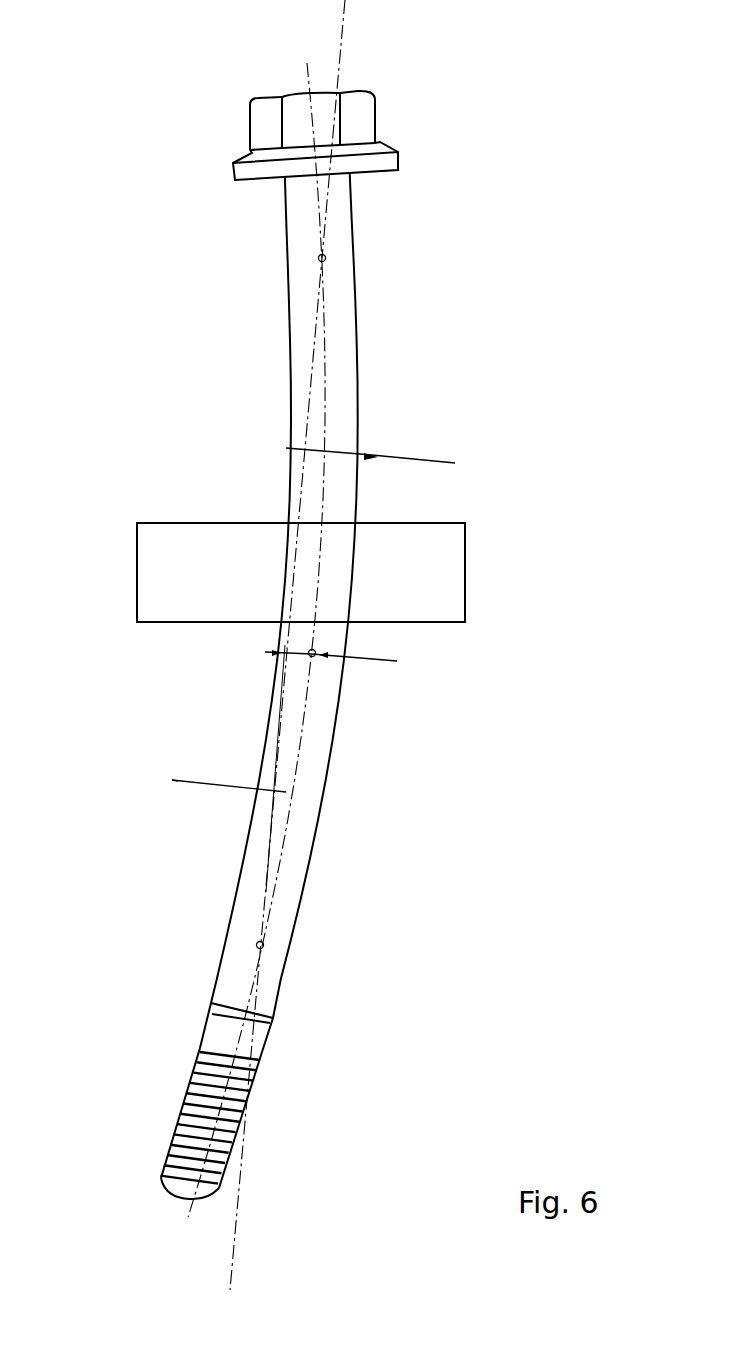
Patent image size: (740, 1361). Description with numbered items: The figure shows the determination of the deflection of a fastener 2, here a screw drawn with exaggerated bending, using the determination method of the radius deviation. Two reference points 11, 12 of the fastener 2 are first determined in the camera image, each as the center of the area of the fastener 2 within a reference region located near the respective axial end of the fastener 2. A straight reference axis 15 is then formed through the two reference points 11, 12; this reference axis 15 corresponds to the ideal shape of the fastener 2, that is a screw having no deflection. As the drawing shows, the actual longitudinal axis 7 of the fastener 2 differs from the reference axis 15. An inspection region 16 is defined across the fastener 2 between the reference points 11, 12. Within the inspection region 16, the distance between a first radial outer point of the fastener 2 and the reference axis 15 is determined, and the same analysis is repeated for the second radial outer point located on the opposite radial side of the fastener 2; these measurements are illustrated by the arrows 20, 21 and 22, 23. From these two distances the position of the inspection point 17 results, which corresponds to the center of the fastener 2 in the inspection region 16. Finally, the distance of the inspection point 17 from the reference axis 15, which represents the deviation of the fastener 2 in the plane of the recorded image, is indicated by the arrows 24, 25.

The fastener 2 is at (345, 645).
The longitudinal axis 7 is at (359, 640).
The reference point 11 is at (430, 229).
The reference point 12 is at (399, 924).
The reference axis 15 is at (385, 645).
The inspection region 16 is at (418, 562).
The inspection point 17 is at (425, 639).
The arrow 20 is at (452, 422).
The arrow 21 is at (216, 416).
The arrow 22 is at (356, 804).
The arrow 23 is at (119, 815).
The arrow 24 is at (426, 686).
The arrow 25 is at (186, 675).